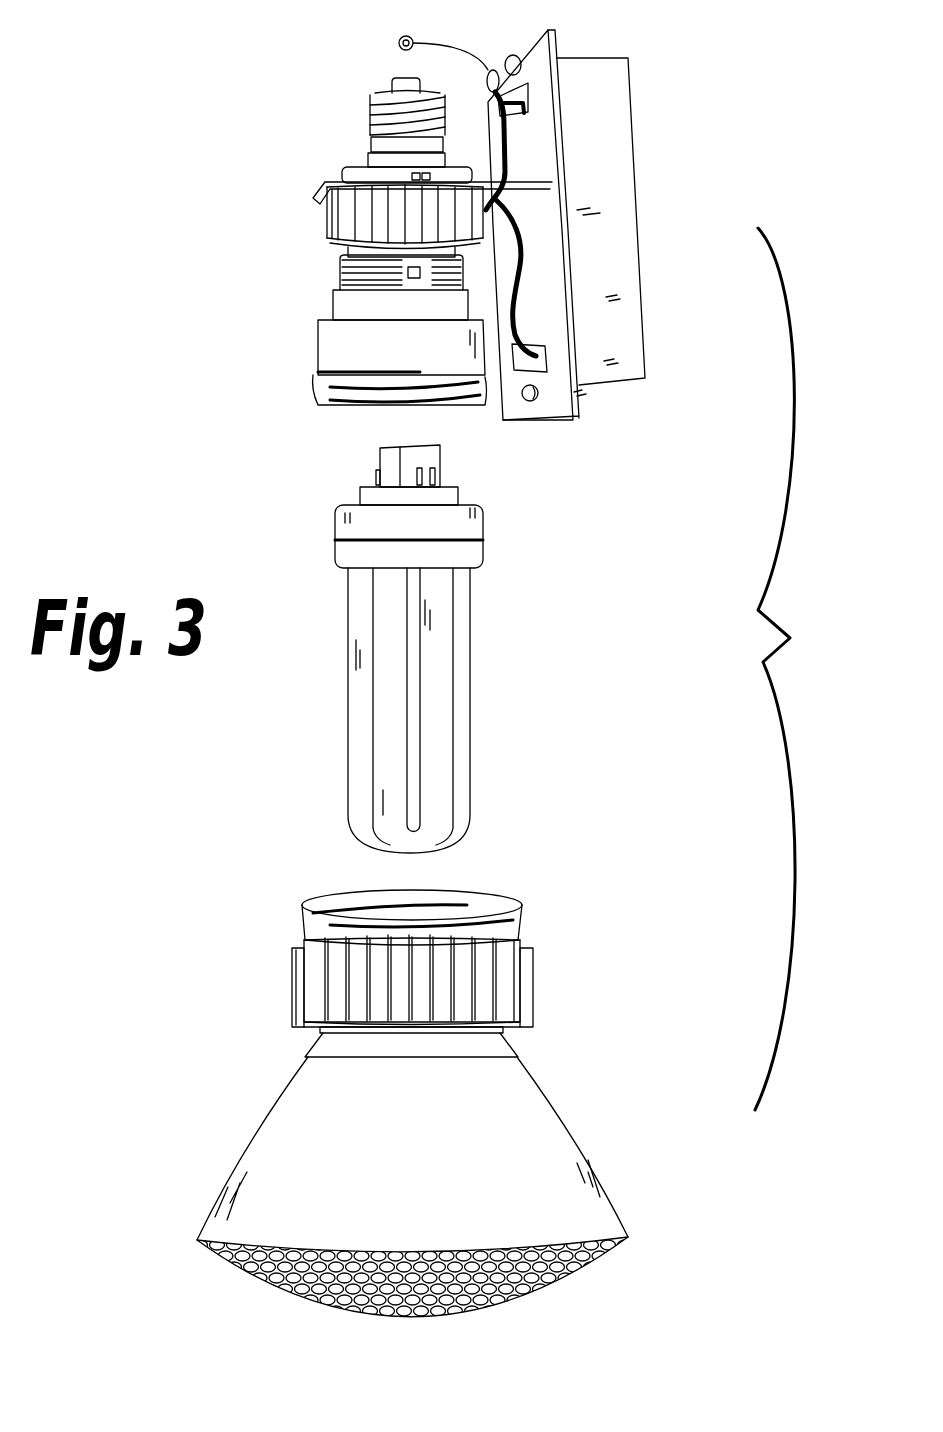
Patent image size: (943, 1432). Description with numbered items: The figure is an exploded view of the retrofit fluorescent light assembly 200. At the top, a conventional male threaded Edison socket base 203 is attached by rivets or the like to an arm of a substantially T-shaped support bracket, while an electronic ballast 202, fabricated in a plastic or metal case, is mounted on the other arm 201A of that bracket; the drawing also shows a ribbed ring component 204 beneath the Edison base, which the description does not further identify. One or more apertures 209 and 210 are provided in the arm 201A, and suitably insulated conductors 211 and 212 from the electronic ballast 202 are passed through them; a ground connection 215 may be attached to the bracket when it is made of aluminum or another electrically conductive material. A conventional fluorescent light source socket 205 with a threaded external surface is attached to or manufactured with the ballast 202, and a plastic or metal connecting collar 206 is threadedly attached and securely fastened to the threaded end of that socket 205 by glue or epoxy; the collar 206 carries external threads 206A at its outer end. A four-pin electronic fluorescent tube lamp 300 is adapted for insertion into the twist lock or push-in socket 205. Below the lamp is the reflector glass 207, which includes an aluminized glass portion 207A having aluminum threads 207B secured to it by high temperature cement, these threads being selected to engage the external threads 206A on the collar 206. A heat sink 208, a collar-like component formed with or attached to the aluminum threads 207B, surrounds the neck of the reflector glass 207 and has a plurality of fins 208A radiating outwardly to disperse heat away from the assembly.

The fluorescent light assembly 200 is at (801, 669).
The arm of support bracket 201A is at (557, 390).
The electronic ballast 202 is at (585, 105).
The male threaded Edison socket base 203 is at (370, 127).
The socket adapter ring 204 is at (343, 213).
The fluorescent light source socket 205 is at (340, 278).
The connecting collar 206 is at (350, 353).
The external threads 206A is at (328, 395).
The reflector glass 207 is at (381, 1106).
The aluminized glass portion 207A is at (543, 1152).
The aluminum threads 207B is at (520, 923).
The heat sink 208 is at (493, 988).
The fins 208A is at (292, 986).
The aperture 209 is at (514, 114).
The aperture 210 is at (518, 363).
The conductor 211 is at (506, 150).
The conductor 212 is at (513, 335).
The ground connection 215 is at (394, 45).
The electronic fluorescent tube lamp 300 is at (437, 665).